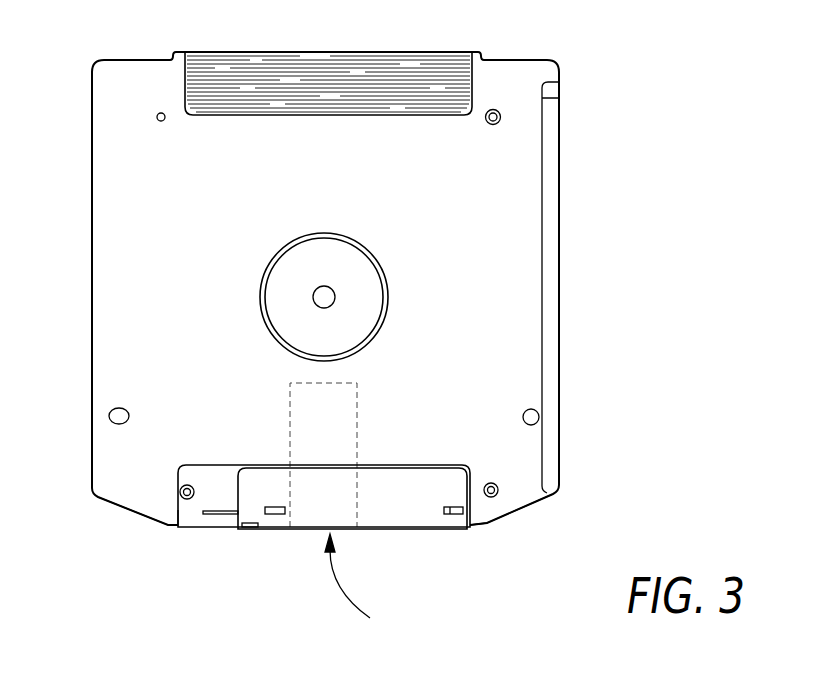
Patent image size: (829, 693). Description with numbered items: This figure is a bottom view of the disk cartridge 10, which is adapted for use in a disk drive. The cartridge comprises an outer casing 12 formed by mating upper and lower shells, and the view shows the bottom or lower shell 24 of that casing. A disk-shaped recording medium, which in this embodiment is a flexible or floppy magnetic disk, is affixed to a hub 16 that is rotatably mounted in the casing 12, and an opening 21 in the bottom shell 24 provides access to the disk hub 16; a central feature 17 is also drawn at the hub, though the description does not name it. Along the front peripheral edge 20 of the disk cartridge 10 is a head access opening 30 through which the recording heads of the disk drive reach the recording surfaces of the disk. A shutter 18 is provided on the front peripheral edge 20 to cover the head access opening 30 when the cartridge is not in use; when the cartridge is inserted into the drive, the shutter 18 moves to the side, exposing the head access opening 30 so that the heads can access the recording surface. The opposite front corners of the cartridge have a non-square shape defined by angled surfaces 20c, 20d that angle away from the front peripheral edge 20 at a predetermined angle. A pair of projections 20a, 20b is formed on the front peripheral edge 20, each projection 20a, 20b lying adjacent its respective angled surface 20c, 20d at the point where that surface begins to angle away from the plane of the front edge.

The disk cartridge 10 is at (70, 66).
The outer casing 12 is at (93, 310).
The hub 16 is at (309, 256).
The hub 17 is at (320, 287).
The shutter 18 is at (397, 493).
The front peripheral edge 20 is at (213, 527).
The projection 20a is at (172, 527).
The projection 20b is at (480, 530).
The angled surface 20c is at (112, 500).
The angled surface 20d is at (525, 507).
The opening 21 is at (385, 269).
The lower shell 24 is at (513, 83).
The head access opening 30 is at (361, 588).